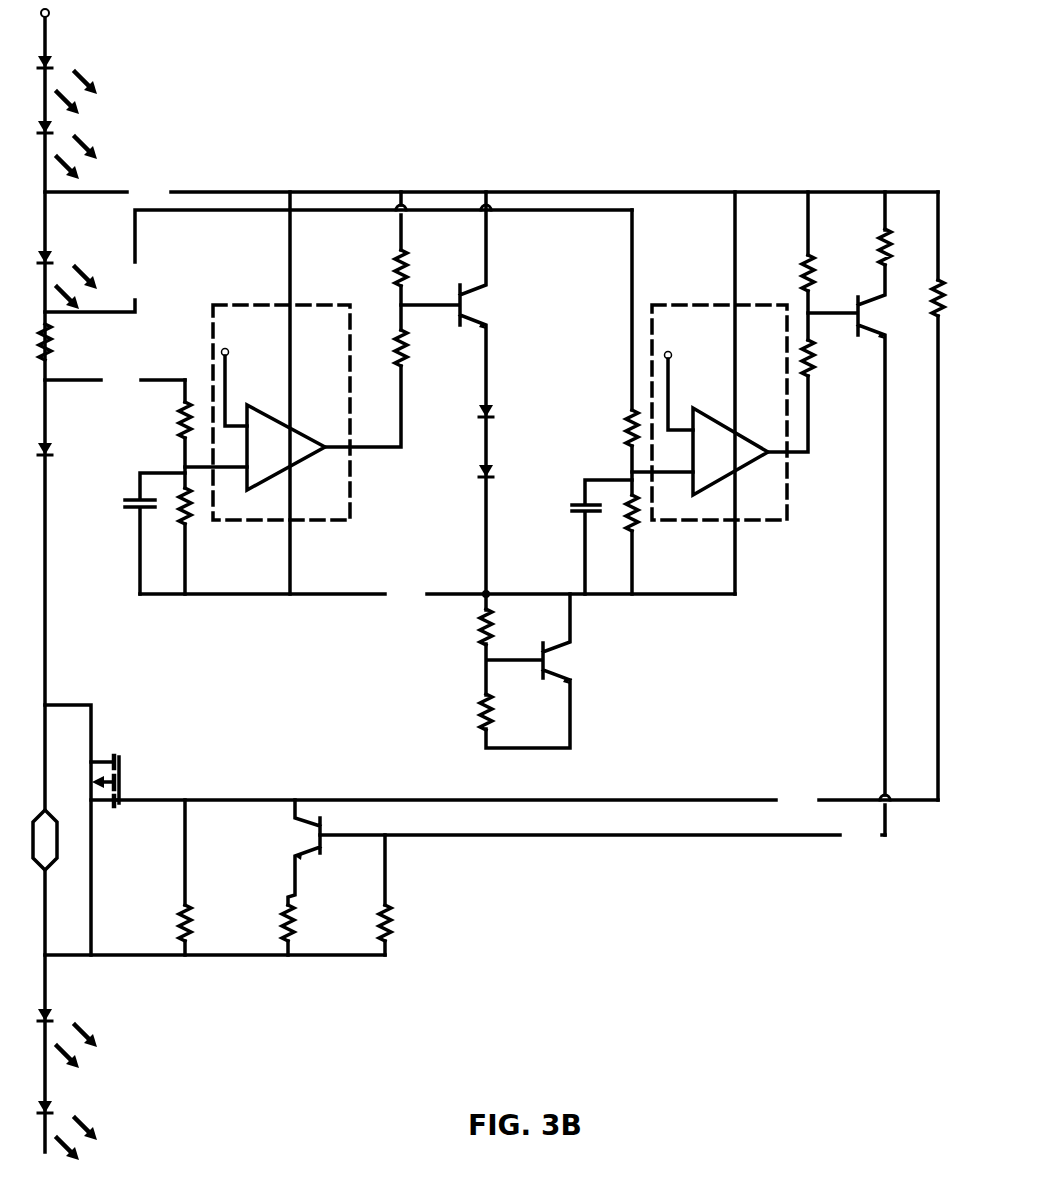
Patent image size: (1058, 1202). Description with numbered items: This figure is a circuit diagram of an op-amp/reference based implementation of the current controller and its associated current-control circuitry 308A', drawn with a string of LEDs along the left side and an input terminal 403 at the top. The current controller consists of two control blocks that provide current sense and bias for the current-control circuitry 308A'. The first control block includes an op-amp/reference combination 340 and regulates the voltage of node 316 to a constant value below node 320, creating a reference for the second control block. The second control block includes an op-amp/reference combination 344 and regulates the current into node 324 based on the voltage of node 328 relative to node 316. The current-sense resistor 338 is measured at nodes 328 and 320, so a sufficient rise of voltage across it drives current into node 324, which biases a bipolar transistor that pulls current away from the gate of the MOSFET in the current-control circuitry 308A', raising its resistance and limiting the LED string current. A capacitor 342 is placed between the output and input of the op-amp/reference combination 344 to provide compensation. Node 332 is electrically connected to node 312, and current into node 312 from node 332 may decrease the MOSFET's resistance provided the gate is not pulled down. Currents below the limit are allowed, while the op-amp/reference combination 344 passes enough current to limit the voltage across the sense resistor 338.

The input terminal 403 is at (50, 13).
The node 332 is at (491, 192).
The node 328 is at (338, 261).
The current-sense resistor 338 is at (53, 341).
The node 320 is at (115, 380).
The op-amp/reference combination 340 is at (255, 521).
The node 316 is at (437, 595).
The capacitor 342 is at (582, 500).
The op-amp/reference combination 344 is at (748, 522).
The node 312 is at (528, 800).
The node 324 is at (602, 835).
The current-control circuitry 308A' is at (194, 725).